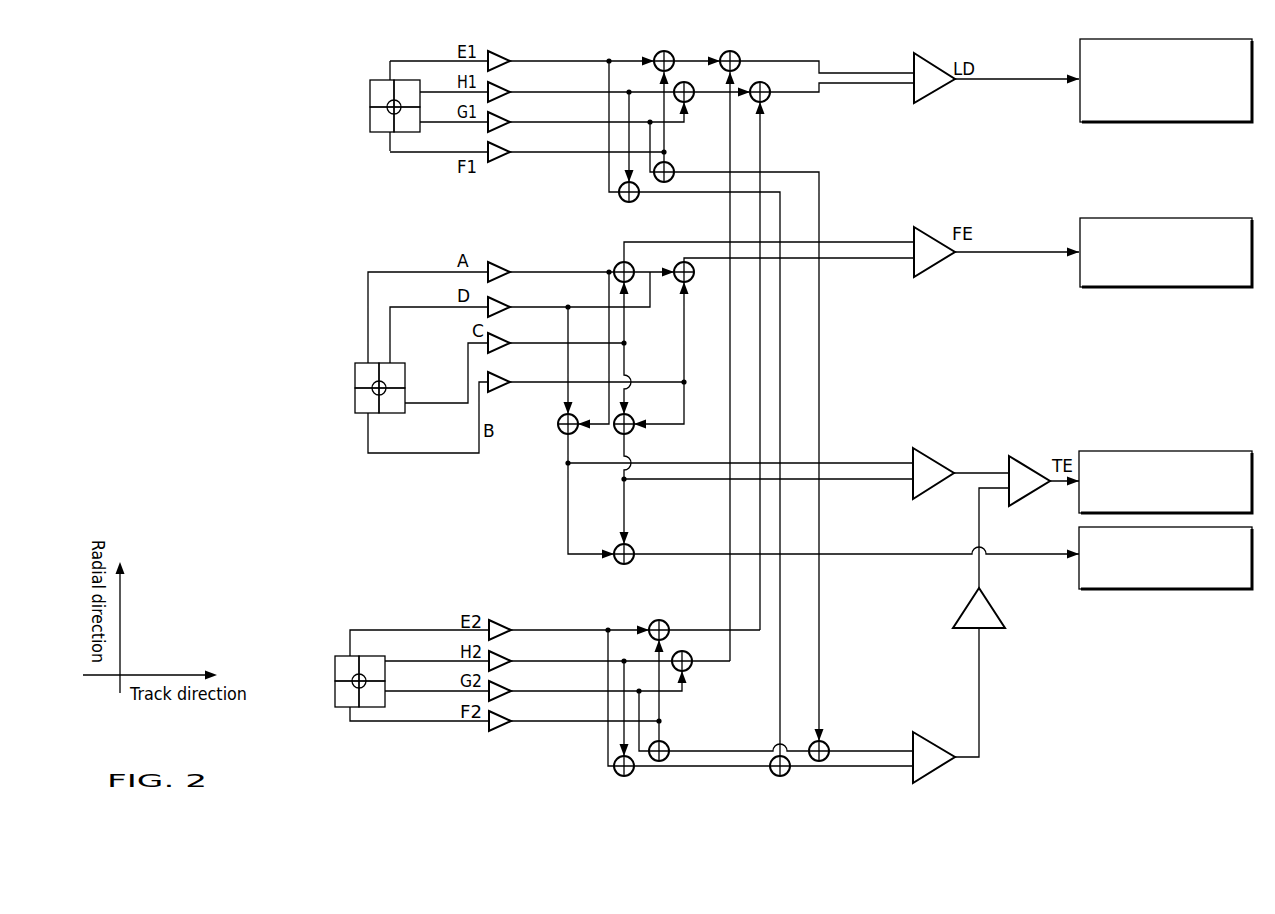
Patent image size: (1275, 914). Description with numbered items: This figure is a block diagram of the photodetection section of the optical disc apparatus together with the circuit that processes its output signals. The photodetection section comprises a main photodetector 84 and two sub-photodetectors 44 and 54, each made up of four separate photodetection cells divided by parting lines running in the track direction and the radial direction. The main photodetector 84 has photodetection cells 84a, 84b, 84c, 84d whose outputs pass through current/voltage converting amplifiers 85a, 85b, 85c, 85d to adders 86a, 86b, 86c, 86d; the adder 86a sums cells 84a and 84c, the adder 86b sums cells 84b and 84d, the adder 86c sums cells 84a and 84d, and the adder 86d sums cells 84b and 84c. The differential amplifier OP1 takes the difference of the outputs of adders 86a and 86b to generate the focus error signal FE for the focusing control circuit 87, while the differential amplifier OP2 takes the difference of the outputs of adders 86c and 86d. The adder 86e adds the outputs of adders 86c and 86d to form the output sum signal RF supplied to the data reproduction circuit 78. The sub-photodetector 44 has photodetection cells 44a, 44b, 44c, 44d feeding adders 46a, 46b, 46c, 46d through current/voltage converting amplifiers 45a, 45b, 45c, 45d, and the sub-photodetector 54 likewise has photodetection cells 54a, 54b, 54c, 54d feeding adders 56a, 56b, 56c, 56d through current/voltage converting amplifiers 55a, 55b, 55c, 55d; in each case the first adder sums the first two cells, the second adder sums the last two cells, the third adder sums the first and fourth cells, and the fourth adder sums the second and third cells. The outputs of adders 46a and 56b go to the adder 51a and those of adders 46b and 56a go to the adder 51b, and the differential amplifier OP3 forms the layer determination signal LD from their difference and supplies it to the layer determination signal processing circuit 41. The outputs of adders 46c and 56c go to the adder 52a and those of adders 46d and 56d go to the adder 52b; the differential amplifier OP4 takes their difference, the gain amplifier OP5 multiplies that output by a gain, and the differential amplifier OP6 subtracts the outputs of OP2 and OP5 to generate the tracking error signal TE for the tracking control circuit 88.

The sub-photodetector 44 is at (388, 120).
The photodetection cell 44a is at (370, 101).
The photodetection cell 44b is at (370, 124).
The photodetection cell 44c is at (404, 133).
The photodetection cell 44d is at (405, 81).
The current/voltage converting amplifier 45a is at (502, 53).
The current/voltage converting amplifier 45b is at (502, 84).
The current/voltage converting amplifier 45c is at (502, 114).
The current/voltage converting amplifier 45d is at (502, 144).
The adder 46a is at (672, 52).
The adder 46b is at (690, 102).
The adder 46c is at (618, 192).
The adder 46d is at (670, 183).
The adder 51a is at (737, 52).
The adder 51b is at (767, 102).
The layer determination signal processing circuit 41 is at (1118, 124).
The focusing control circuit 87 is at (1216, 217).
The main photodetector 84 is at (378, 398).
The photodetection cell 84a is at (355, 383).
The photodetection cell 84b is at (355, 407).
The photodetection cell 84c is at (404, 415).
The photodetection cell 84d is at (405, 364).
The current/voltage converting amplifier 85a is at (502, 263).
The current/voltage converting amplifier 85b is at (502, 298).
The current/voltage converting amplifier 85c is at (502, 334).
The current/voltage converting amplifier 85d is at (502, 375).
The adder 86a is at (617, 265).
The adder 86b is at (693, 283).
The adder 86c is at (558, 420).
The adder 86d is at (633, 432).
The adder 86e is at (616, 546).
The tracking control circuit 88 is at (1164, 450).
The data reproduction circuit 78 is at (1166, 593).
The sub-photodetector 54 is at (354, 698).
The photodetection cell 54a is at (335, 671).
The photodetection cell 54b is at (335, 697).
The photodetection cell 54c is at (372, 710).
The photodetection cell 54d is at (375, 658).
The current/voltage converting amplifier 55a is at (500, 621).
The current/voltage converting amplifier 55b is at (500, 652).
The current/voltage converting amplifier 55c is at (500, 682).
The current/voltage converting amplifier 55d is at (500, 713).
The adder 56a is at (662, 620).
The adder 56b is at (692, 672).
The adder 56c is at (614, 765).
The adder 56d is at (668, 741).
The adder 52a is at (773, 756).
The adder 52b is at (827, 742).
The differential amplifier OP1 is at (930, 230).
The differential amplifier OP2 is at (935, 453).
The differential amplifier OP3 is at (930, 56).
The differential amplifier OP4 is at (933, 740).
The gain amplifier OP5 is at (996, 612).
The differential amplifier OP6 is at (1027, 500).